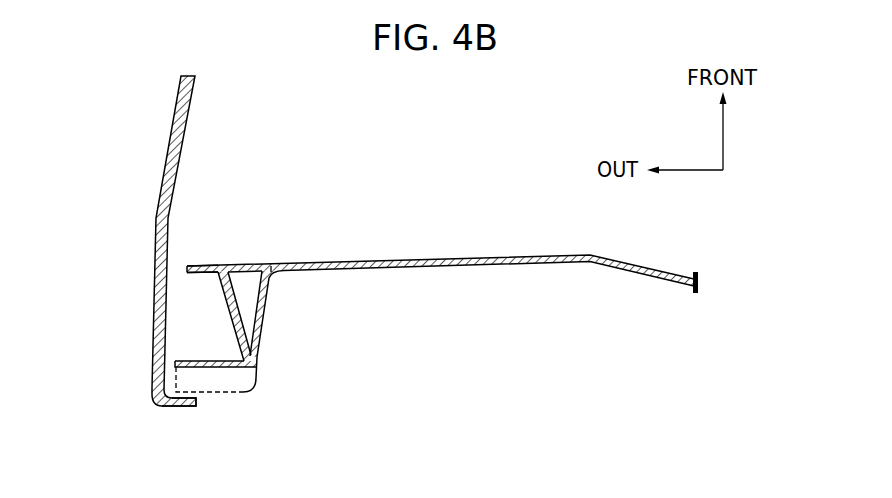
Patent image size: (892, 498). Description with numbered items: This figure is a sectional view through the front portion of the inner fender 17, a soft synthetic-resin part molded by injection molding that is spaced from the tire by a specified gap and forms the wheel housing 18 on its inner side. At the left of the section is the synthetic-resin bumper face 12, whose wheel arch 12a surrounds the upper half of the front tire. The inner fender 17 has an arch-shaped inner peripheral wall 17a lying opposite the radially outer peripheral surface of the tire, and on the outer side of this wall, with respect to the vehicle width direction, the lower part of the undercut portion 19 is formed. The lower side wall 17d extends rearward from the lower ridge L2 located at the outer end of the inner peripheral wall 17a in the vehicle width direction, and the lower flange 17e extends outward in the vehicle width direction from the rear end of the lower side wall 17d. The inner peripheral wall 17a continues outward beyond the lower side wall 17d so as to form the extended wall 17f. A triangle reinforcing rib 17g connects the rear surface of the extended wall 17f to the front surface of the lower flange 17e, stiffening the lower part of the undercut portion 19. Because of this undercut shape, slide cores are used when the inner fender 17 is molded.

The bumper face 12 is at (160, 186).
The wheel arch 12a is at (182, 407).
The inner fender 17 is at (436, 303).
The inner peripheral wall 17a is at (509, 265).
The lower side wall 17d is at (264, 321).
The lower flange 17e is at (213, 367).
The extended wall 17f is at (206, 266).
The triangle reinforcing rib 17g is at (234, 330).
The wheel housing 18 is at (447, 315).
The undercut portion 19 is at (275, 358).
The lower ridge L2 is at (271, 268).